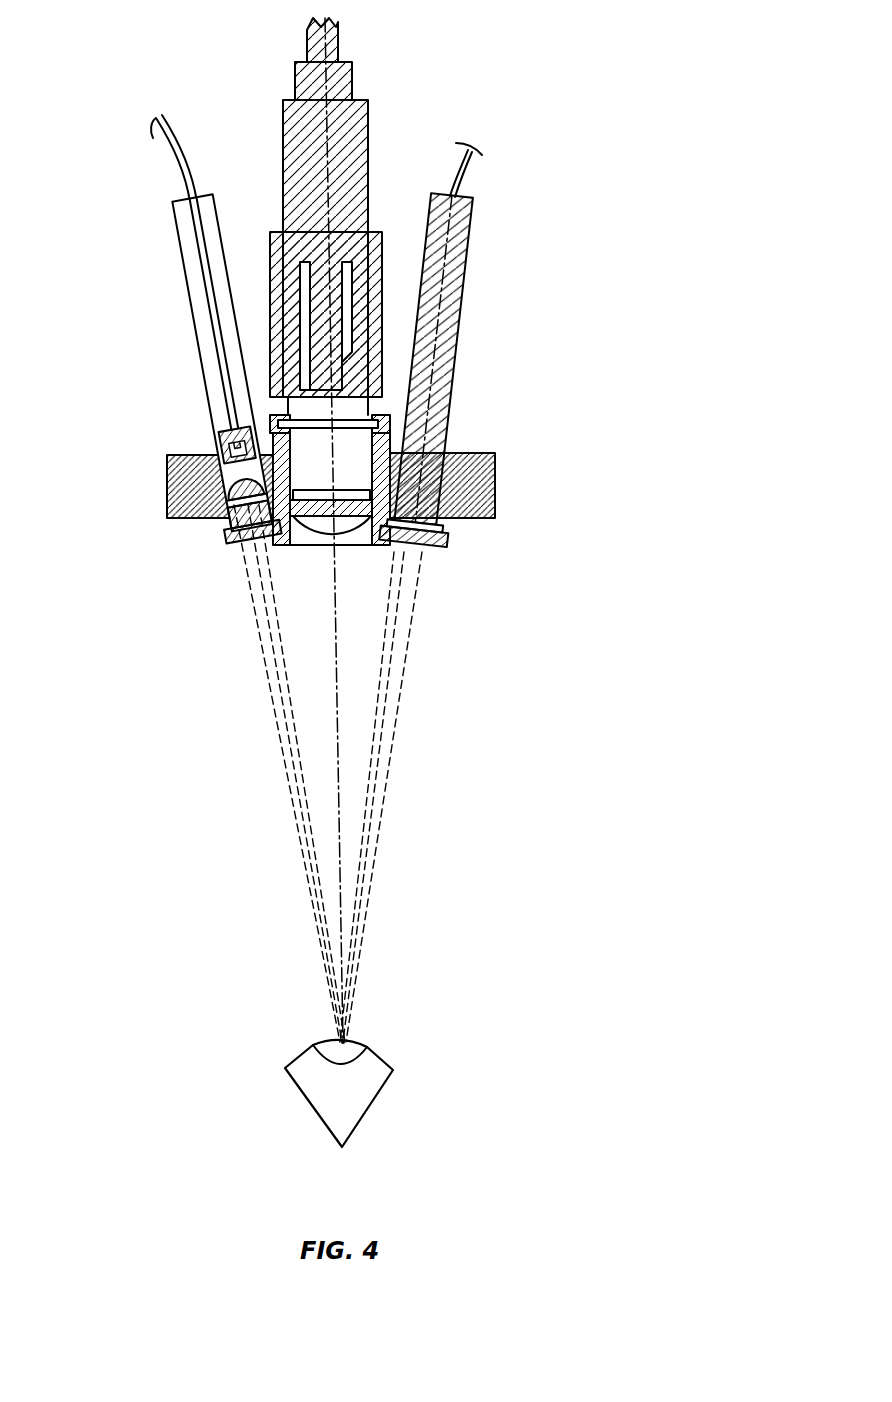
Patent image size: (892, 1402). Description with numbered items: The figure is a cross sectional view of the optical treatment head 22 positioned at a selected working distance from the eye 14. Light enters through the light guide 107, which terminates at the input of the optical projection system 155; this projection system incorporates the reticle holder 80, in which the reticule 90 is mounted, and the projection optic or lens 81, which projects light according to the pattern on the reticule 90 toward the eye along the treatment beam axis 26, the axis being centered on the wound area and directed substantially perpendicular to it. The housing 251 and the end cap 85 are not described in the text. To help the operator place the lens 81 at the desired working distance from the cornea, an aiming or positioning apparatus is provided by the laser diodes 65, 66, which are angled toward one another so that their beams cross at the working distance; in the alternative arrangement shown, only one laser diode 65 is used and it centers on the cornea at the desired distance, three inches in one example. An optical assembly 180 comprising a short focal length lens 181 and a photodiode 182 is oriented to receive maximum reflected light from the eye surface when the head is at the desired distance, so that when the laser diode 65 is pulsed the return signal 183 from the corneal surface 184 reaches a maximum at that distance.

The eye 14 is at (378, 1072).
The optical treatment head 22 is at (603, 371).
The treatment beam axis 26 is at (335, 730).
The laser diode 65 is at (452, 400).
The laser diode 66 is at (193, 312).
The reticle holder 80 is at (391, 422).
The projection lens 81 is at (323, 523).
The end cap 85 is at (437, 553).
The reticule 90 is at (348, 420).
The light guide 107 is at (326, 42).
The optical projection system 155 is at (301, 446).
The optical assembly 180 is at (208, 489).
The short focal length lens 181 is at (223, 502).
The photodiode 182 is at (222, 436).
The return signal 183 is at (258, 717).
The corneal surface 184 is at (355, 1040).
The housing 251 is at (369, 119).